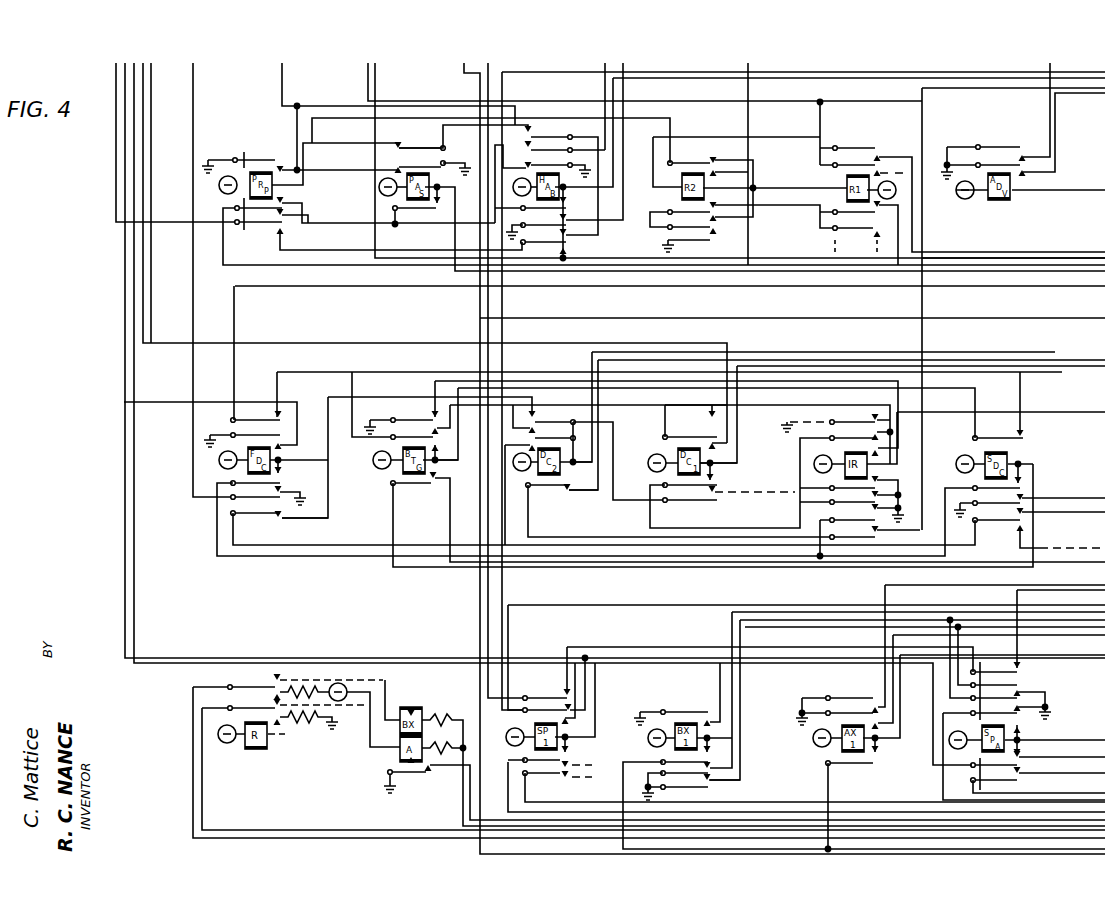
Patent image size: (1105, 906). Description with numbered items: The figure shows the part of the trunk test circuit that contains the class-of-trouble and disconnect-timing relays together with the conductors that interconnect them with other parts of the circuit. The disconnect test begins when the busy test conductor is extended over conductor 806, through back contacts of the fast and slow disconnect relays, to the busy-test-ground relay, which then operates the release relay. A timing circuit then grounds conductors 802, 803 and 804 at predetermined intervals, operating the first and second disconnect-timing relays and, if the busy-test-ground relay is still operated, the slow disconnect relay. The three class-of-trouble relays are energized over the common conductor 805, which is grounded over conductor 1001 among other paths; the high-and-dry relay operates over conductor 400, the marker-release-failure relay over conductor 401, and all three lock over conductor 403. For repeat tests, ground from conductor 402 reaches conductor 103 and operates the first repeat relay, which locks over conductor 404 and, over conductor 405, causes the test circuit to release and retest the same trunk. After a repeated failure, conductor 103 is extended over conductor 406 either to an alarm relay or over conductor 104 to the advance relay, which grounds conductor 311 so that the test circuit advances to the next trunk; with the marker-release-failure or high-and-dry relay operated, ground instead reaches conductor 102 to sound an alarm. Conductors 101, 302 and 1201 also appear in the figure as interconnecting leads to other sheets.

The conductor 101 is at (690, 101).
The conductor 102 is at (395, 260).
The conductor 103 is at (150, 222).
The conductor 104 is at (1046, 190).
The conductor 302 is at (728, 318).
The conductor 311 is at (1048, 128).
The conductor 400 is at (962, 88).
The conductor 401 is at (827, 271).
The conductor 402 is at (282, 88).
The conductor 403 is at (853, 78).
The conductor 404 is at (1002, 252).
The conductor 405 is at (1052, 258).
The conductor 406 is at (748, 112).
The conductor 802 is at (1062, 372).
The conductor 803 is at (1058, 346).
The conductor 804 is at (393, 520).
The conductor 805 is at (762, 265).
The conductor 806 is at (1033, 287).
The conductor 1001 is at (193, 131).
The conductor 1201 is at (480, 612).